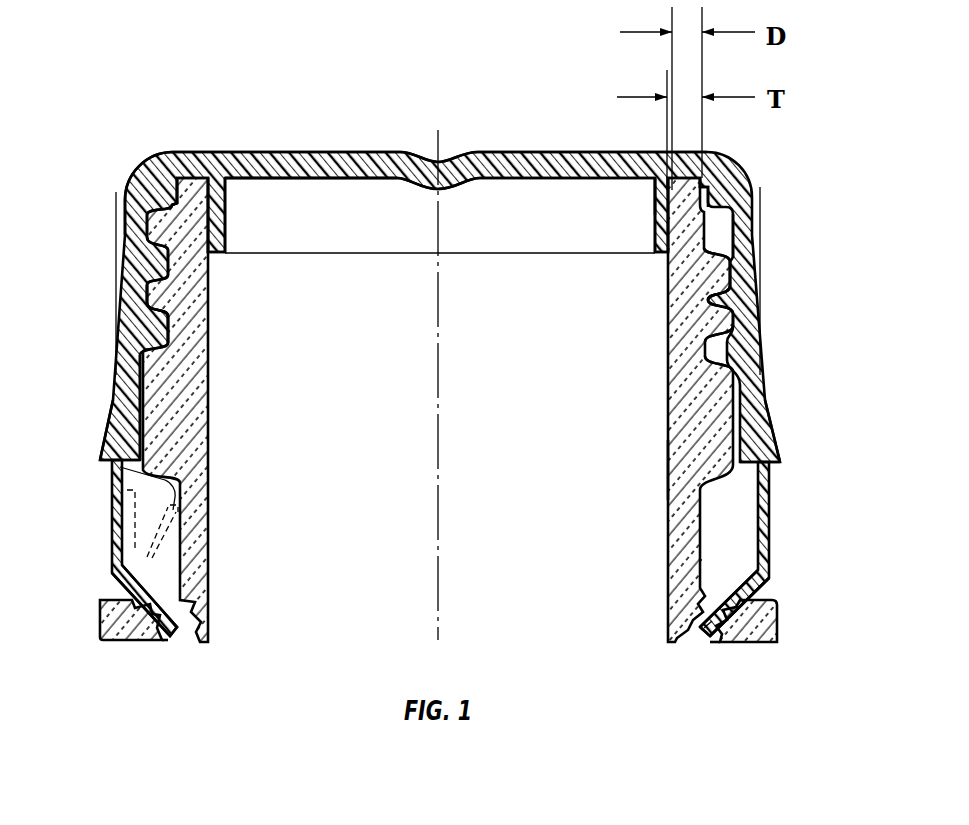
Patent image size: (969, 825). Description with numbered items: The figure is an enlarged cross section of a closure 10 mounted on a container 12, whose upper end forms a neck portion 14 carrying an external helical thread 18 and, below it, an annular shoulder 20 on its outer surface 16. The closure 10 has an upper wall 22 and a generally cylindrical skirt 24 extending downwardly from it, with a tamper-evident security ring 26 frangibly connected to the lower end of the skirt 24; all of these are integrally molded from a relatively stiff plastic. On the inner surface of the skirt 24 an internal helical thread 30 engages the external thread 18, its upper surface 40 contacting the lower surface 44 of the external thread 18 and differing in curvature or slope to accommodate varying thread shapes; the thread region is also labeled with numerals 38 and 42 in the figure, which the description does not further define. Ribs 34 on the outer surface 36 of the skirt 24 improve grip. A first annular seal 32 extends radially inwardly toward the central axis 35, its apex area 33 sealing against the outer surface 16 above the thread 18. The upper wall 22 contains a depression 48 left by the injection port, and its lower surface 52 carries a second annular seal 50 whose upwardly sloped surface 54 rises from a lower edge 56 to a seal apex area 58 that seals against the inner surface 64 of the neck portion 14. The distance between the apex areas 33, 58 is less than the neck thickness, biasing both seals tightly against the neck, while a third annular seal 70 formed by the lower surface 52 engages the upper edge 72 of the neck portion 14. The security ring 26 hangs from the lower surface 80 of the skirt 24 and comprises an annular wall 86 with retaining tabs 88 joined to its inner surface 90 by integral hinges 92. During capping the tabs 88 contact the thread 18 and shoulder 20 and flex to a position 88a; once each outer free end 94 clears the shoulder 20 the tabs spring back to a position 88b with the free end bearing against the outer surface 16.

The closure 10 is at (522, 47).
The container 12 is at (782, 619).
The neck portion 14 is at (683, 552).
The outer surface 16 is at (698, 540).
The external helical thread 18 is at (722, 250).
The annular shoulder 20 is at (160, 378).
The upper wall 22 is at (526, 160).
The skirt 24 is at (122, 402).
The tamper-evident security ring 26 is at (112, 532).
The internal helical thread 30 is at (166, 342).
The first annular seal 32 is at (160, 192).
The apex area 33 is at (708, 203).
The ribs 34 is at (120, 248).
The central axis 35 is at (438, 412).
The outer surface 36 is at (108, 423).
The thread 38 is at (703, 373).
The upper surface 40 is at (737, 288).
The skirt flare 42 is at (740, 378).
The lower surface 44 is at (710, 293).
The depression 48 is at (448, 163).
The second annular seal 50 is at (232, 210).
The lower surface 52 is at (343, 180).
The upwardly sloped surface 54 is at (655, 238).
The lower edge 56 is at (343, 254).
The seal apex area 58 is at (663, 213).
The inner surface 64 is at (667, 464).
The third annular seal 70 is at (158, 156).
The upper edge 72 is at (202, 178).
The lower surface 80 is at (771, 463).
The annular wall 86 is at (767, 552).
The retaining tabs 88 is at (727, 588).
The flexed position of retaining tabs 88a is at (122, 485).
The sprung-back position of retaining tabs 88b is at (101, 460).
The inner surface 90 is at (745, 511).
The integral hinges 92 is at (764, 572).
The outer free end 94 is at (174, 627).